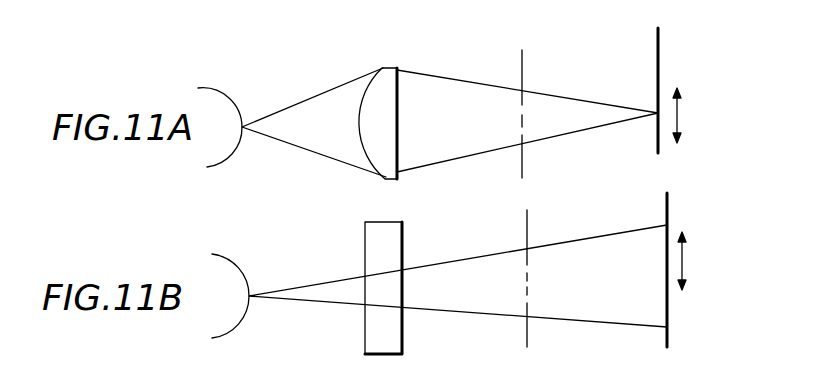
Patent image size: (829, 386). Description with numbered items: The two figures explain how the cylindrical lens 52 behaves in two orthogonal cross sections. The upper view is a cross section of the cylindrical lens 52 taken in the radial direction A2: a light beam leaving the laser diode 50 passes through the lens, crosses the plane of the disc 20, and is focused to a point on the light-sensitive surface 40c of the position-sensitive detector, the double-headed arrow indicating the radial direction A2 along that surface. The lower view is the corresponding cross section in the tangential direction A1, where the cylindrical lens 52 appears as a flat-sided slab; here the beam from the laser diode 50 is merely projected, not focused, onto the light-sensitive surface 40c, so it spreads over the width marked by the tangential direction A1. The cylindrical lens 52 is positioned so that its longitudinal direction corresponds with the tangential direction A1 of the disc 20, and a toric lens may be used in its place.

In FIG. 11A, the laser diode 50 is at (230, 98).
In FIG. 11B, the laser diode 50 is at (238, 270).
In FIG. 11A, the cylindrical lens 52 is at (398, 143).
In FIG. 11B, the cylindrical lens 52 is at (403, 292).
In FIG. 11A, the disc 20 is at (522, 70).
In FIG. 11B, the disc 20 is at (527, 226).
In FIG. 11A, the light-sensitive surface 40c is at (660, 58).
In FIG. 11B, the light-sensitive surface 40c is at (668, 212).
In FIG. 11A, the radial direction A2 is at (679, 115).
In FIG. 11B, the tangential direction A1 is at (700, 260).